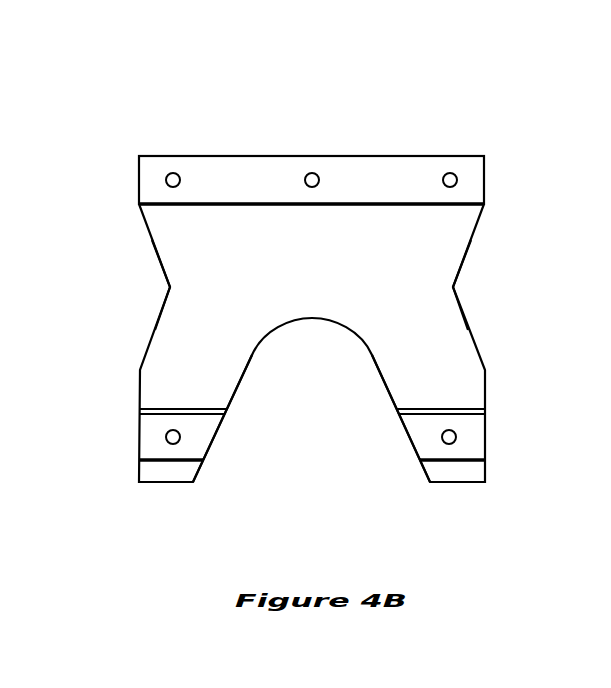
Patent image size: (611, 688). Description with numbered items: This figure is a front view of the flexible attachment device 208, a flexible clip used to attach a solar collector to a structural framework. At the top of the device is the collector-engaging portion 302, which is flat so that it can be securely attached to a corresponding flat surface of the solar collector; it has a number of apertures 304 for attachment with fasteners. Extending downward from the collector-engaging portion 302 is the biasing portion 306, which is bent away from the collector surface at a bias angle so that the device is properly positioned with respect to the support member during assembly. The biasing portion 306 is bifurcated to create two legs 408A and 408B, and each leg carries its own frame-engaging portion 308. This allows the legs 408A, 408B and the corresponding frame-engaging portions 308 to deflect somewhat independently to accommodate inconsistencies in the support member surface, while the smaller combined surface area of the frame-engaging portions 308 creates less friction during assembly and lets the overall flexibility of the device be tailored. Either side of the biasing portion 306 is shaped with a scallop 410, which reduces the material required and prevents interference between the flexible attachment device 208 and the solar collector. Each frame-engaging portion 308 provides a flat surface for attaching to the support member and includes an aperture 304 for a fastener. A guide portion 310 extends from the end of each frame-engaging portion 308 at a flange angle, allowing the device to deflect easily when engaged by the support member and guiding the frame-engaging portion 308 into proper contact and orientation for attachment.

The flexible attachment device 208 is at (528, 192).
The collector-engaging portion 302 is at (147, 176).
The apertures 304 is at (444, 174).
The biasing portion 306 is at (328, 270).
The frame-engaging portions 308 is at (152, 432).
The guide portion 310 is at (172, 475).
The leg 408A is at (190, 368).
The leg 408B is at (433, 368).
The scallop 410 is at (170, 288).